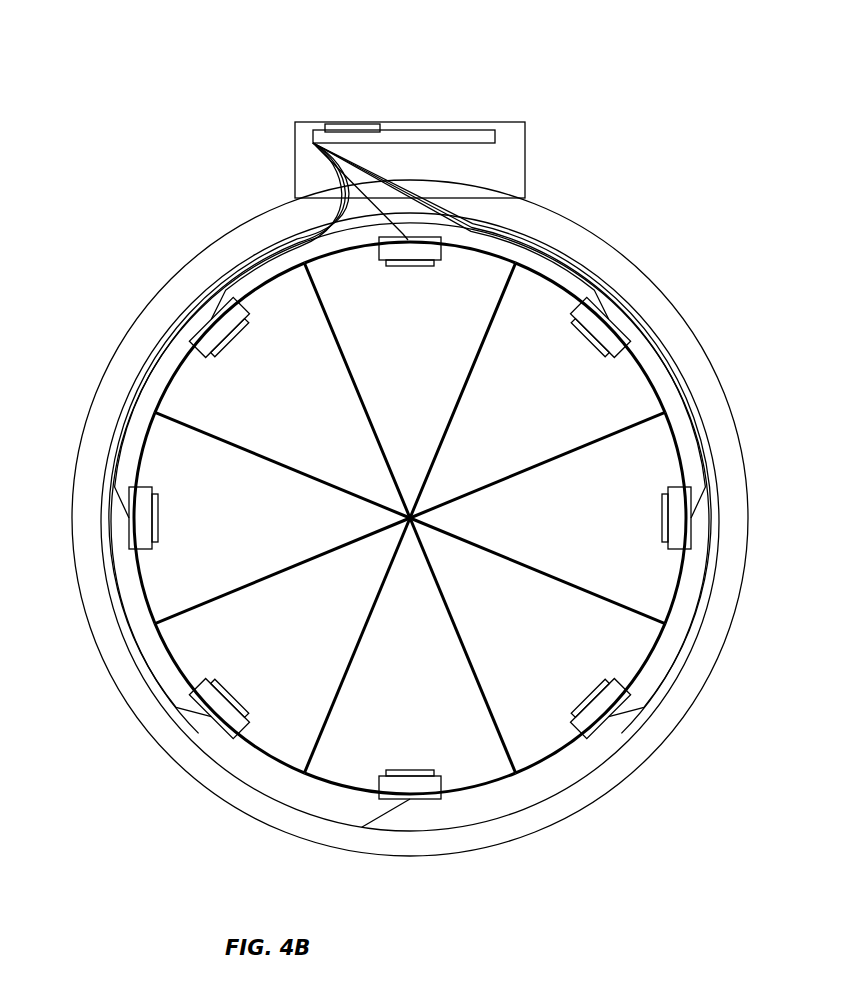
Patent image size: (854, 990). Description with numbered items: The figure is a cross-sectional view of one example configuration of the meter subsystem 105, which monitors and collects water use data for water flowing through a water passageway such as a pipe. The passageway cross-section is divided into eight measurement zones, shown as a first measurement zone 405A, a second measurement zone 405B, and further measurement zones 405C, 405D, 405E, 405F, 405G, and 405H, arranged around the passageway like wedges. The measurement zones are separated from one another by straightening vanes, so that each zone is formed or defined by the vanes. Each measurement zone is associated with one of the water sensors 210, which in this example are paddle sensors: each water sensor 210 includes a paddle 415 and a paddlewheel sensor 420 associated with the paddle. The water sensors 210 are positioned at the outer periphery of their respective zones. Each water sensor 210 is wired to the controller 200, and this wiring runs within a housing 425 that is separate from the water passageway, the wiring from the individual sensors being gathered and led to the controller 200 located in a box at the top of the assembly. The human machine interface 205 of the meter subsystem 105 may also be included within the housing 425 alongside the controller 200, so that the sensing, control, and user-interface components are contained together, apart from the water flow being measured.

The meter subsystem 105 is at (107, 209).
The controller 200 is at (482, 129).
The human machine interface 205 is at (358, 124).
The water sensor 210 is at (468, 449).
The first measurement zone 405A is at (409, 380).
The second measurement zone 405B is at (537, 390).
The measurement zone 405C is at (548, 517).
The measurement zone 405D is at (537, 645).
The measurement zone 405E is at (409, 656).
The measurement zone 405F is at (282, 645).
The measurement zone 405G is at (272, 517).
The measurement zone 405H is at (259, 363).
The paddle 415 is at (468, 449).
The paddlewheel sensor 420 is at (622, 318).
The housing 425 is at (532, 150).